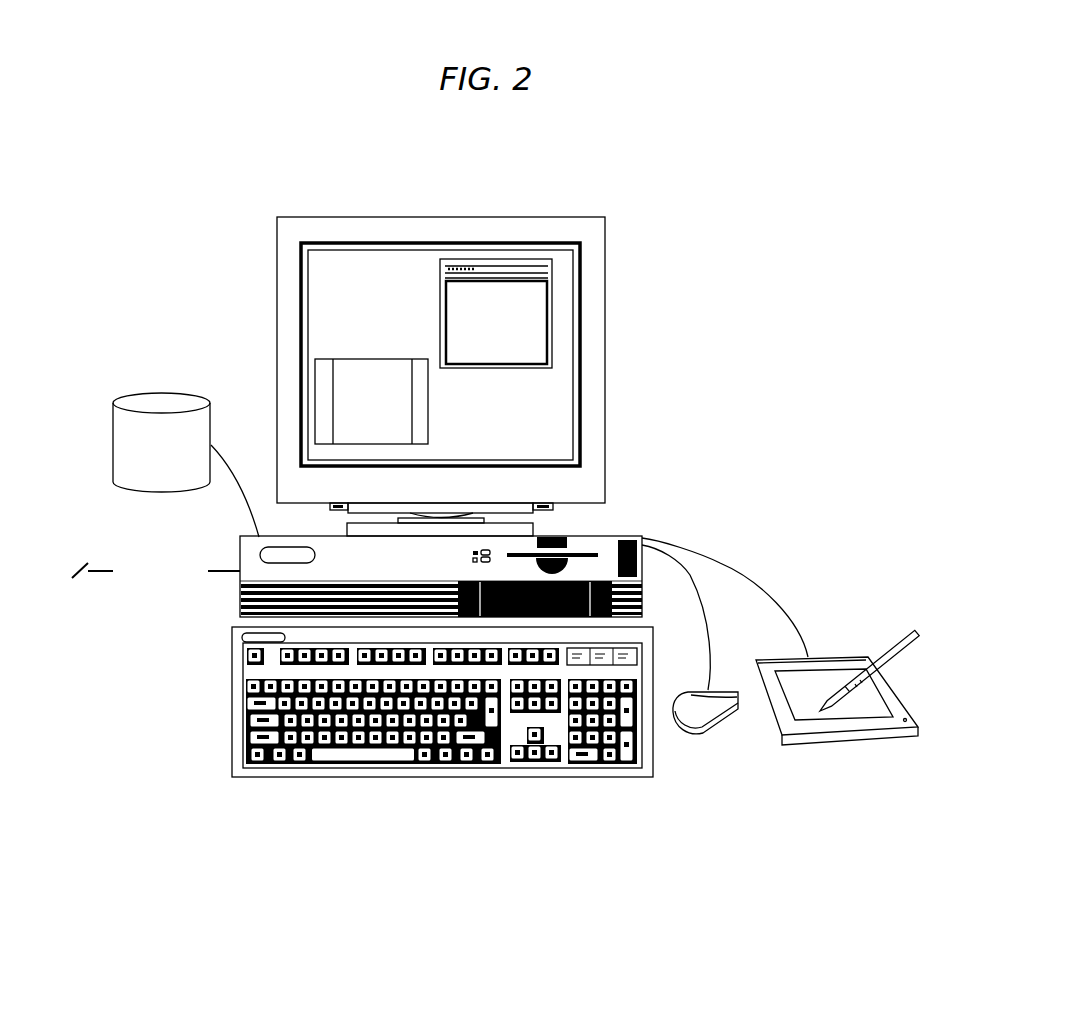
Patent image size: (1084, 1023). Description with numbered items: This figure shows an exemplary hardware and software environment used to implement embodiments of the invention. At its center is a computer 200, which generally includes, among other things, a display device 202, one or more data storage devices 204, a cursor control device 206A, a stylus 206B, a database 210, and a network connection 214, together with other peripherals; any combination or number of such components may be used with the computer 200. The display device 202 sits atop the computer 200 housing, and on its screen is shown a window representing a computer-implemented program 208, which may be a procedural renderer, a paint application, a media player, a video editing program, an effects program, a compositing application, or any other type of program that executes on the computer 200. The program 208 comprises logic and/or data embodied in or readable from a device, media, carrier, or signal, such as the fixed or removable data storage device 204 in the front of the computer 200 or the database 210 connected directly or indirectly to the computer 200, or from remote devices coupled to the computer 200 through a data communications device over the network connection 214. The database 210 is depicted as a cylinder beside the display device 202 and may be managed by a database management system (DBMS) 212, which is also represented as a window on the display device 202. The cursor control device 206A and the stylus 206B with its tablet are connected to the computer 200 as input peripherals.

The computer 200 is at (230, 613).
The display device 202 is at (582, 216).
The data storage device 204 is at (587, 550).
The cursor control device 206A is at (708, 750).
The stylus 206B is at (858, 750).
The program 208 is at (553, 309).
The database 210 is at (186, 465).
The database management system (DBMS) 212 is at (333, 360).
The network connection 214 is at (156, 570).